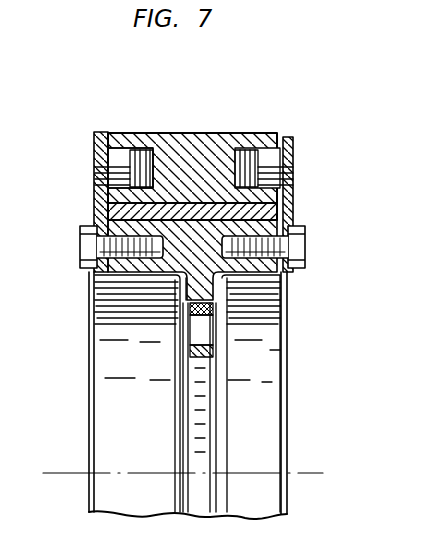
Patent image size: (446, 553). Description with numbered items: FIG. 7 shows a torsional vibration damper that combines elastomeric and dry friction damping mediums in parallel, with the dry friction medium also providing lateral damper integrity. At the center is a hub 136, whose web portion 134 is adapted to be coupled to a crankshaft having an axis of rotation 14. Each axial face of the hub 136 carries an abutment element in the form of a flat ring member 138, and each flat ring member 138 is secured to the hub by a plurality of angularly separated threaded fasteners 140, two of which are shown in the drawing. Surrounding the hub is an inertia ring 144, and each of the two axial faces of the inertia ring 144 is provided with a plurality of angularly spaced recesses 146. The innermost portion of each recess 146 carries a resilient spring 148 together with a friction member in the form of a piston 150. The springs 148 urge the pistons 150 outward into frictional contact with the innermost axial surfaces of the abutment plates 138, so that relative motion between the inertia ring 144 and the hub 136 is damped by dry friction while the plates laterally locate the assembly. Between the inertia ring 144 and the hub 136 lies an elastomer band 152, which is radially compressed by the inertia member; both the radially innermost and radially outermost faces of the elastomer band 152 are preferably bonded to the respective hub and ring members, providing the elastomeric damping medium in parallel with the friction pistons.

The axis of rotation 14 is at (291, 470).
The web portion 134 is at (218, 282).
The hub 136 is at (166, 272).
The flat ring member 138 is at (98, 182).
The threaded fasteners 140 is at (84, 246).
The inertia ring 144 is at (212, 150).
The recesses 146 is at (132, 150).
The resilient spring 148 is at (107, 166).
The piston 150 is at (120, 150).
The elastomer band 152 is at (270, 205).